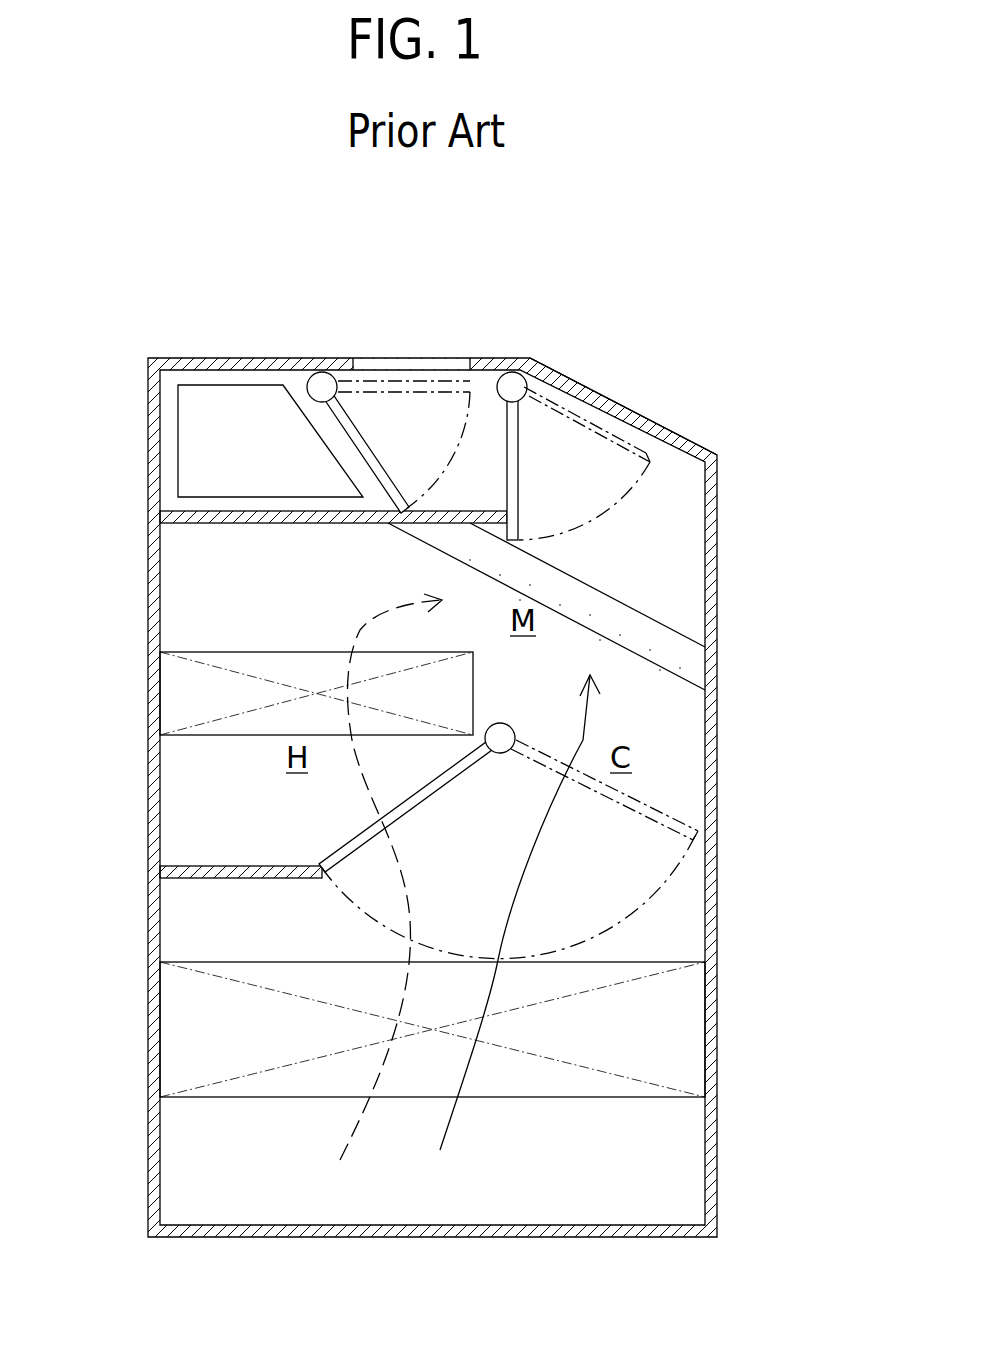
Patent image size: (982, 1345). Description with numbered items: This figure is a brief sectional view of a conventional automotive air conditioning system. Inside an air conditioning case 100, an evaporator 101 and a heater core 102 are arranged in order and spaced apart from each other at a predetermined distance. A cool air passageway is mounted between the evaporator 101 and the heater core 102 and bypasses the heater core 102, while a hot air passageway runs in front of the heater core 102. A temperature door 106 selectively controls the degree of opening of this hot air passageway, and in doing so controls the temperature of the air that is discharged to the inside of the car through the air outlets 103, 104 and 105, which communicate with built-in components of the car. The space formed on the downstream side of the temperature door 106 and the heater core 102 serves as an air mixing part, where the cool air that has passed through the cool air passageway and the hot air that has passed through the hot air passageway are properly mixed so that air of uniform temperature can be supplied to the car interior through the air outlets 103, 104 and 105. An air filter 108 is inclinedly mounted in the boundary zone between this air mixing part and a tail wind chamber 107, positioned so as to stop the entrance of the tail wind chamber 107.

The air conditioning case 100 is at (716, 525).
The evaporator 101 is at (663, 1025).
The heater core 102 is at (190, 686).
The air outlet 103 is at (655, 433).
The air outlet 104 is at (462, 360).
The air outlet 105 is at (216, 400).
The temperature door 106 is at (385, 812).
The tail wind chamber 107 is at (315, 362).
The air filter 108 is at (675, 643).